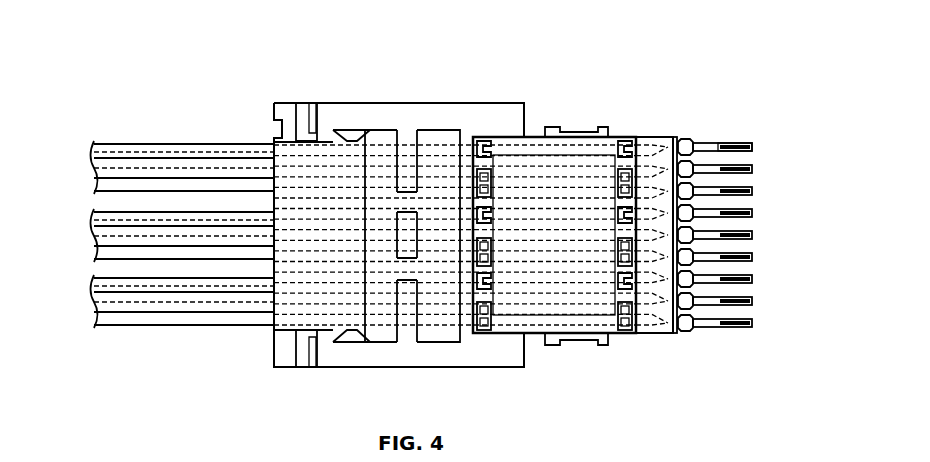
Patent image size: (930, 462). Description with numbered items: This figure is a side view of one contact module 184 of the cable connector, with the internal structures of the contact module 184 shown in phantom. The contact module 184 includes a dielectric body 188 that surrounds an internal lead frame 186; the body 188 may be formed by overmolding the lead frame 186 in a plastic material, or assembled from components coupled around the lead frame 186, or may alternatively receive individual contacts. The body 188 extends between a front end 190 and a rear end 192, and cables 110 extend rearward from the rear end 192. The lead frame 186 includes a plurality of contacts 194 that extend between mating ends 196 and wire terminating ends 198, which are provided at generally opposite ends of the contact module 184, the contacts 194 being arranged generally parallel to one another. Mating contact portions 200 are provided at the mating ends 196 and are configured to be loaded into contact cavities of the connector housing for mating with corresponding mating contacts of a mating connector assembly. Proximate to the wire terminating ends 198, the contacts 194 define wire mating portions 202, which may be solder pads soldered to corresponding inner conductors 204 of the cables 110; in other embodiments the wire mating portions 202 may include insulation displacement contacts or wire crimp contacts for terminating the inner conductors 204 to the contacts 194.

The cable 110 is at (143, 143).
The contact module 184 is at (482, 53).
The lead frame 186 is at (645, 133).
The dielectric body 188 is at (521, 135).
The front end 190 is at (676, 138).
The rear end 192 is at (273, 113).
The contact 194 is at (578, 150).
The mating end 196 is at (699, 127).
The wire terminating end 198 is at (389, 133).
The mating contact portion 200 is at (720, 147).
The wire mating portion 202 is at (370, 140).
The inner conductor 204 is at (373, 140).